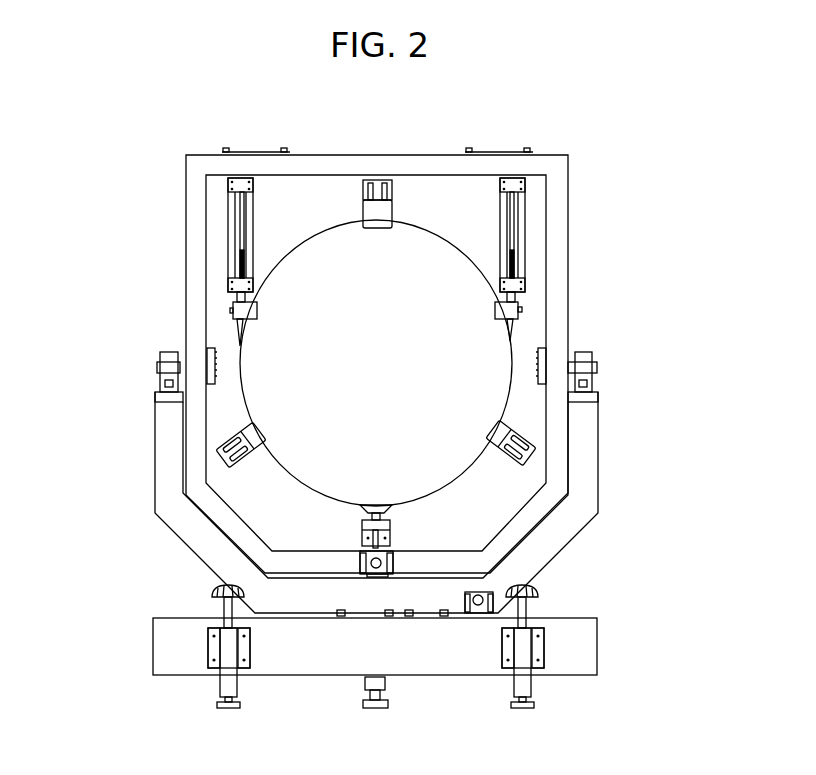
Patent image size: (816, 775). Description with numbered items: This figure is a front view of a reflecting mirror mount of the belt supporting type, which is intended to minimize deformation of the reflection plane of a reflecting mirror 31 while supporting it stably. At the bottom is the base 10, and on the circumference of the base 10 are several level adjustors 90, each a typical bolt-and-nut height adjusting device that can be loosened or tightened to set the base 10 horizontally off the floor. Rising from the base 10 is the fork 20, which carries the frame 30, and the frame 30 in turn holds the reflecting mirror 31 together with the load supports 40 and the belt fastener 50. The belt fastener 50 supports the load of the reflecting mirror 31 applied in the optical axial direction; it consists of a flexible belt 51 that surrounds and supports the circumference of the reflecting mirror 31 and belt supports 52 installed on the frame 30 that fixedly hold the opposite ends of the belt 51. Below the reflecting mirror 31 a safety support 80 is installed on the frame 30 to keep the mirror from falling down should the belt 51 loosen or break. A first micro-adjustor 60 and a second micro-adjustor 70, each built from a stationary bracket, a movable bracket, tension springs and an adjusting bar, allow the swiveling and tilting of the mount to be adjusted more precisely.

The base 10 is at (303, 678).
The fork 20 is at (155, 465).
The frame 30 is at (572, 208).
The reflecting mirror 31 is at (497, 333).
The load support 40 is at (538, 436).
The belt fastener 50 is at (350, 265).
The belt 51 is at (243, 330).
The belt support 52 is at (226, 296).
The first micro-adjustor 60 is at (493, 586).
The second micro-adjustor 70 is at (397, 550).
The safety support 80 is at (358, 526).
The level adjustor 90 is at (210, 683).